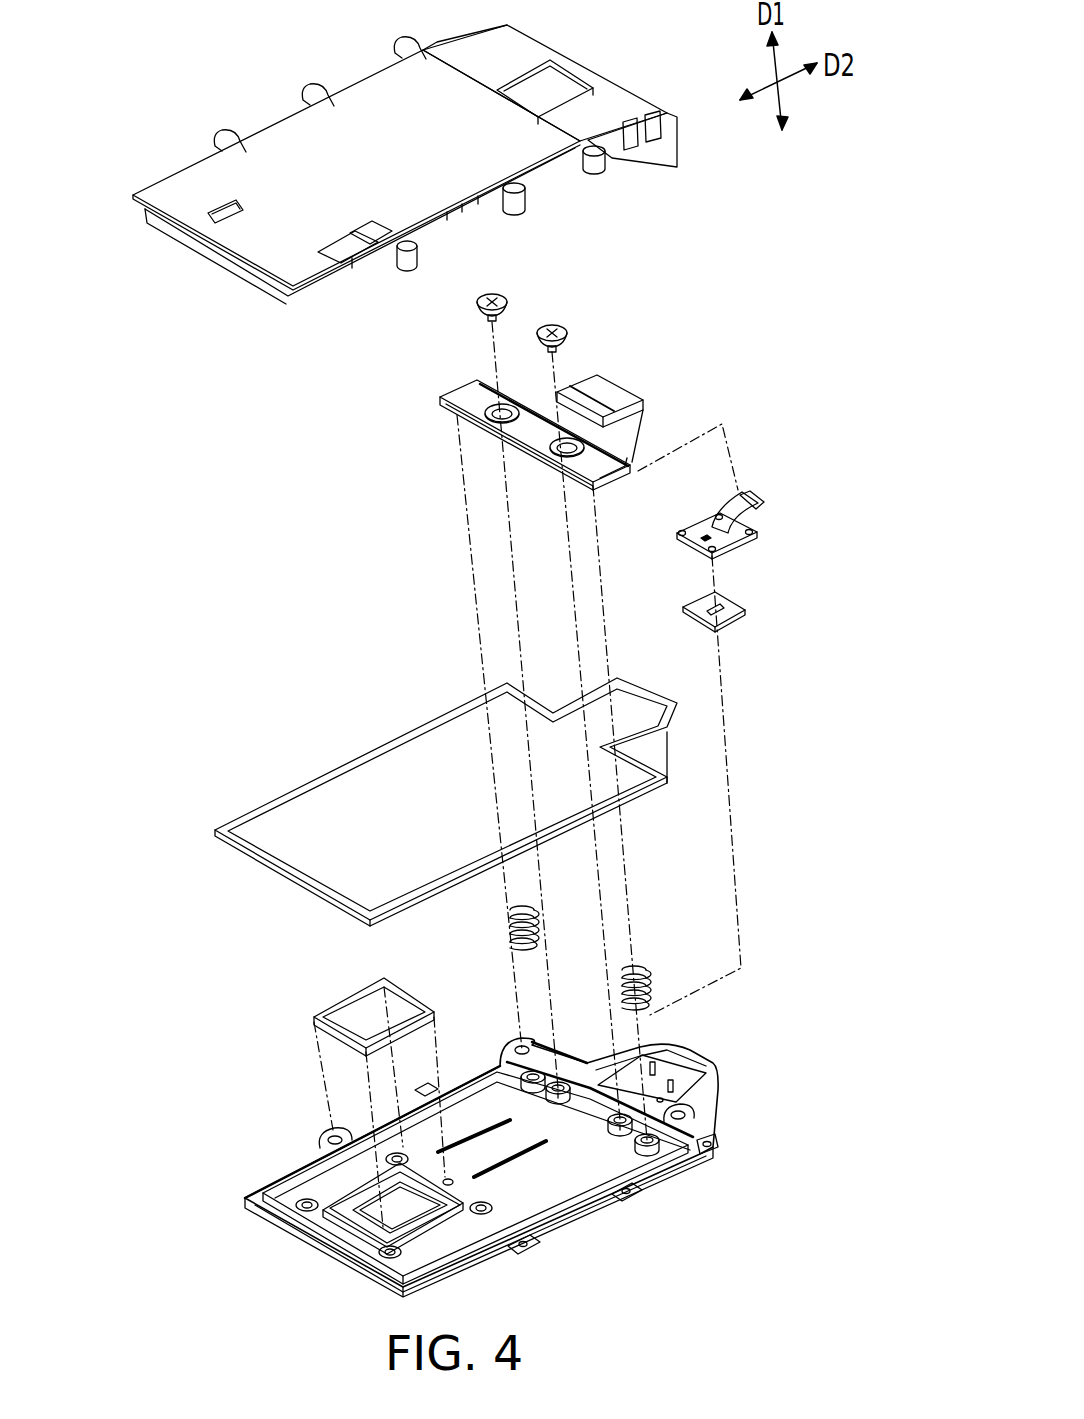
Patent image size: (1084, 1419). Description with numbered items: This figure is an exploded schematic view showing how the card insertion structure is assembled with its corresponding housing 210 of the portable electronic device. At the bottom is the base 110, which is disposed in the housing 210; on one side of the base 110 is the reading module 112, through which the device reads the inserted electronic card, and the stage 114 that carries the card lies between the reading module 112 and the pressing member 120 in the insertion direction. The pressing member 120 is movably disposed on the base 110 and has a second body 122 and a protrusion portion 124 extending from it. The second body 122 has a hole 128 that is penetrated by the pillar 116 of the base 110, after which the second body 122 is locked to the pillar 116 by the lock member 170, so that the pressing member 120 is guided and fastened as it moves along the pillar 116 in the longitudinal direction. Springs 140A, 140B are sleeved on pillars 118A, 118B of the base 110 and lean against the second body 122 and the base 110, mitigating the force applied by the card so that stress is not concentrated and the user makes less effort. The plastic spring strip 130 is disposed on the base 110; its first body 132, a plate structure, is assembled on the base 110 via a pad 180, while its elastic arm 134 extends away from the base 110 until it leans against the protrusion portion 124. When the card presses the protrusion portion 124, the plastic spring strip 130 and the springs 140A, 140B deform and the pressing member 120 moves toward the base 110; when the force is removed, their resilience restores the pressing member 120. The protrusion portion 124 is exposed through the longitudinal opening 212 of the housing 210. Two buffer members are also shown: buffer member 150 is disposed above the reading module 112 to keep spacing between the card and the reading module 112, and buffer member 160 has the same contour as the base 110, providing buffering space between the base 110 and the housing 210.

The base 110 is at (252, 1182).
The reading module 112 is at (378, 1215).
The stage 114 is at (493, 1098).
The pillar 116 is at (558, 1096).
The pillar 118A is at (652, 1150).
The pillar 118B is at (558, 1082).
The pressing member 120 is at (690, 325).
The second body 122 is at (478, 380).
The protrusion portion 124 is at (612, 388).
The hole 128 is at (488, 403).
The plastic spring strip 130 is at (775, 553).
The first body 132 is at (690, 516).
The elastic arm 134 is at (752, 507).
The spring 140A is at (644, 978).
The spring 140B is at (510, 934).
The buffer member 150 is at (318, 1003).
The buffer member 160 is at (396, 735).
The lock member 170 is at (503, 296).
The pad 180 is at (730, 614).
The housing 210 is at (293, 137).
The longitudinal opening 212 is at (548, 92).